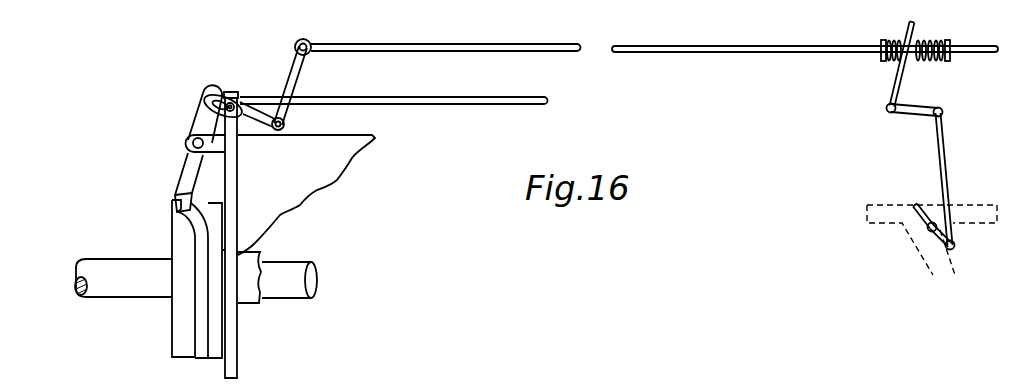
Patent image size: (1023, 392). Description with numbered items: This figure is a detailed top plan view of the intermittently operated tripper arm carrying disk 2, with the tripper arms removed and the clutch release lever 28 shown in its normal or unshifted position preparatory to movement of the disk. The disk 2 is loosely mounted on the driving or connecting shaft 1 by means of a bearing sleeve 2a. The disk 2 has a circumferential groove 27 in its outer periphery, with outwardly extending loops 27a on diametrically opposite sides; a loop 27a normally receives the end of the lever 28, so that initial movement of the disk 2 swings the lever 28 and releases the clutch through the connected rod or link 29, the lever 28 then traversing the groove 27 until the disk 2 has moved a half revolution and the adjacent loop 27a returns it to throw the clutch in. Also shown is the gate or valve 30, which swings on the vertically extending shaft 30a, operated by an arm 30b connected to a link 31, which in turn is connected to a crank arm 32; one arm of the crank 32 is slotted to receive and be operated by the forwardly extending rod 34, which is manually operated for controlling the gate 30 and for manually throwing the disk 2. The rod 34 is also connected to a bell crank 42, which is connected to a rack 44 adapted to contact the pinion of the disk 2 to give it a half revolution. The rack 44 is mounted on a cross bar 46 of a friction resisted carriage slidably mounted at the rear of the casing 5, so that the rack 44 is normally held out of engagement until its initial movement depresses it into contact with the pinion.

The driving or connecting shaft 1 is at (99, 268).
The arm carrying disk 2 is at (178, 318).
The bearing sleeve 2a is at (248, 300).
The casing 5 is at (333, 146).
The circumferential groove 27 is at (203, 282).
The loop 27a is at (178, 216).
The lever 28 is at (198, 118).
The rod or link 29 is at (453, 102).
The gate or valve 30 is at (915, 205).
The vertically extending shaft 30a is at (930, 230).
The arm 30b is at (955, 237).
The link 31 is at (948, 172).
The crank arm 32 is at (912, 108).
The rod 34 is at (697, 42).
The bell crank 42 is at (290, 72).
The rack 44 is at (232, 367).
The cross bar 46 is at (232, 263).